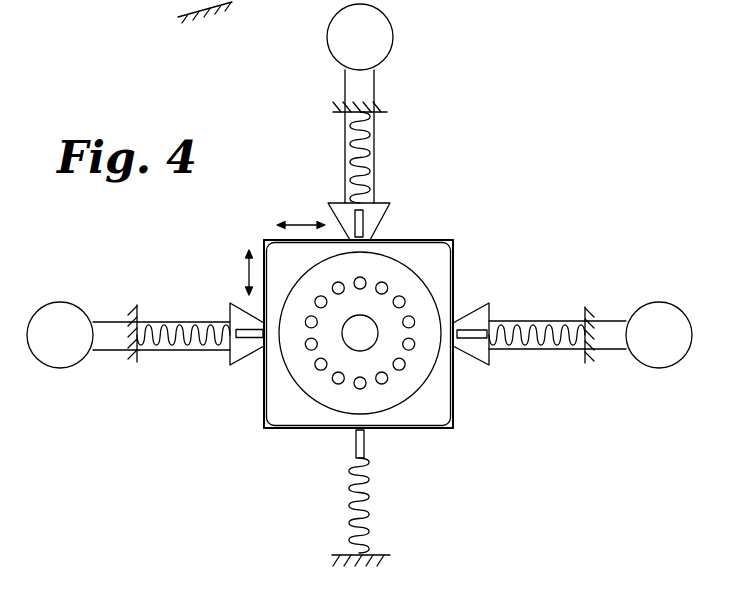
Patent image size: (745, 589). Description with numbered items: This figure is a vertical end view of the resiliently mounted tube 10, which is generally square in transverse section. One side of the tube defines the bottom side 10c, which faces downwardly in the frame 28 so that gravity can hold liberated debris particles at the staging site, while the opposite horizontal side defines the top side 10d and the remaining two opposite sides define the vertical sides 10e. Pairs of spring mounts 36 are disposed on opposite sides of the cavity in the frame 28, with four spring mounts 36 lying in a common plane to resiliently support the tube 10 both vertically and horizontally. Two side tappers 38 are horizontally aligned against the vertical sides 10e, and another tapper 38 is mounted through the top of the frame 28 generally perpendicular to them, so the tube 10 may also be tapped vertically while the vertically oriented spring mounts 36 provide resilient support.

The tube 10 is at (467, 229).
The bottom side 10c is at (398, 430).
The top side 10d is at (415, 238).
The vertical sides 10e is at (264, 385).
The frame 28 is at (378, 555).
The spring mounts 36 is at (537, 321).
The tappers 38 is at (345, 82).